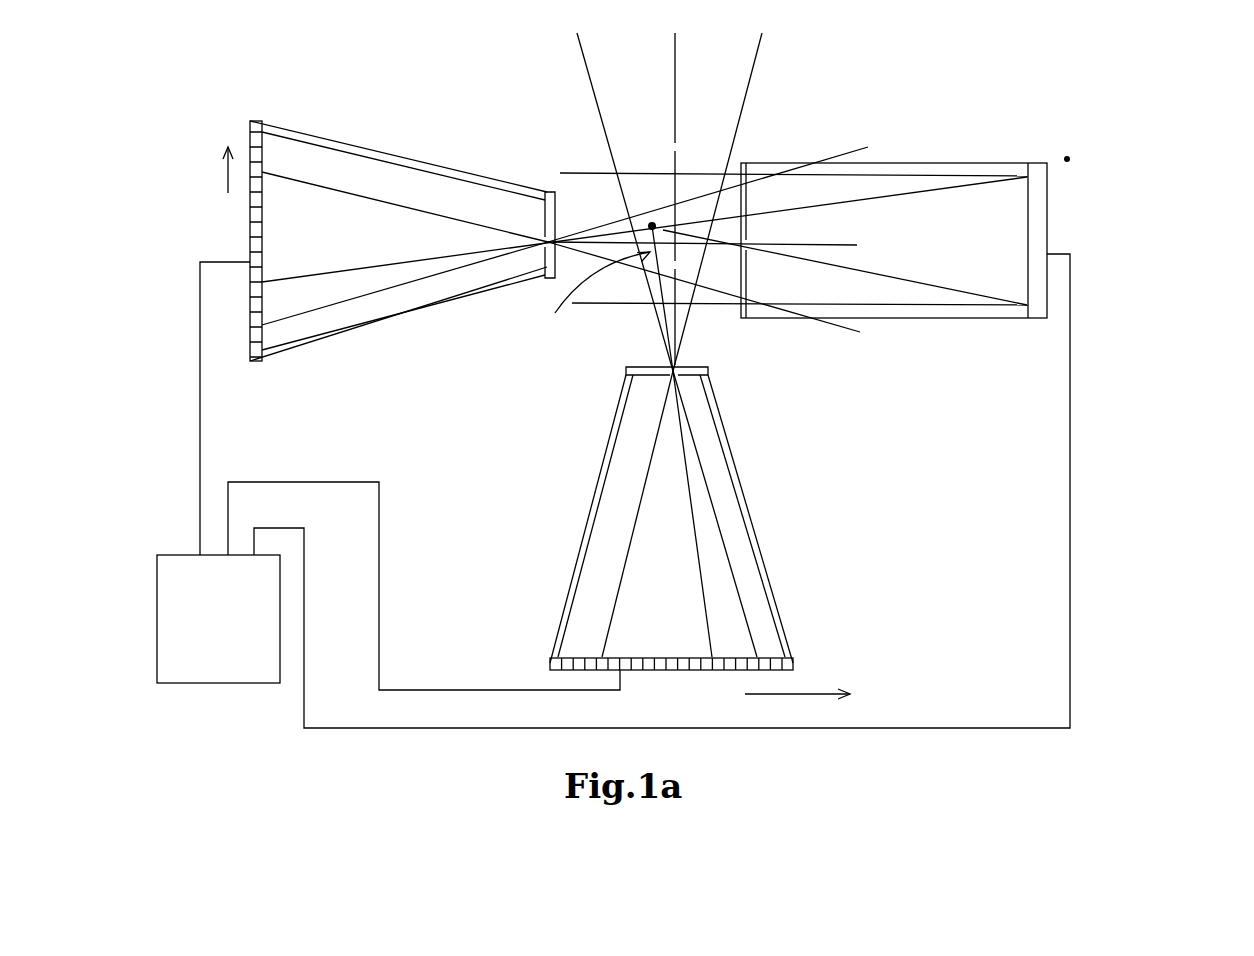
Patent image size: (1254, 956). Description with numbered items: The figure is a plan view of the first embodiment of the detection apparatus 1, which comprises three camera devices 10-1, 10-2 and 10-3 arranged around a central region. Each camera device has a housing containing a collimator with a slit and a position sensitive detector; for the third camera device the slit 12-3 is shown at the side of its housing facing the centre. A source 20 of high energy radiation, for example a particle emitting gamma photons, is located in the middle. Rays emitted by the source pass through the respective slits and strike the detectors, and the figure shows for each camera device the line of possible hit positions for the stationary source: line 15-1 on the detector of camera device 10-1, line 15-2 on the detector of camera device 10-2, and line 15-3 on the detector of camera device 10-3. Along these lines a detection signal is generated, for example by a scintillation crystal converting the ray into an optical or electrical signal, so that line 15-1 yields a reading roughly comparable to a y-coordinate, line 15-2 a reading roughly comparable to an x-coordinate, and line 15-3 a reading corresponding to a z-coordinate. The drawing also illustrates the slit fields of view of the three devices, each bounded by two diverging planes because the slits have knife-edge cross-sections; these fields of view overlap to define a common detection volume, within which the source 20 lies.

The detection apparatus 1 is at (1090, 343).
The first camera device 10-1 is at (572, 202).
The second camera device 10-2 is at (749, 380).
The third camera device 10-3 is at (915, 185).
The slit of third camera device 12-3 is at (747, 203).
The line of possible positions on first detector 15-1 is at (273, 267).
The line of possible positions on second detector 15-2 is at (700, 650).
The line of possible positions on third detector 15-3 is at (1010, 258).
The source of high energy radiation 20 is at (650, 223).